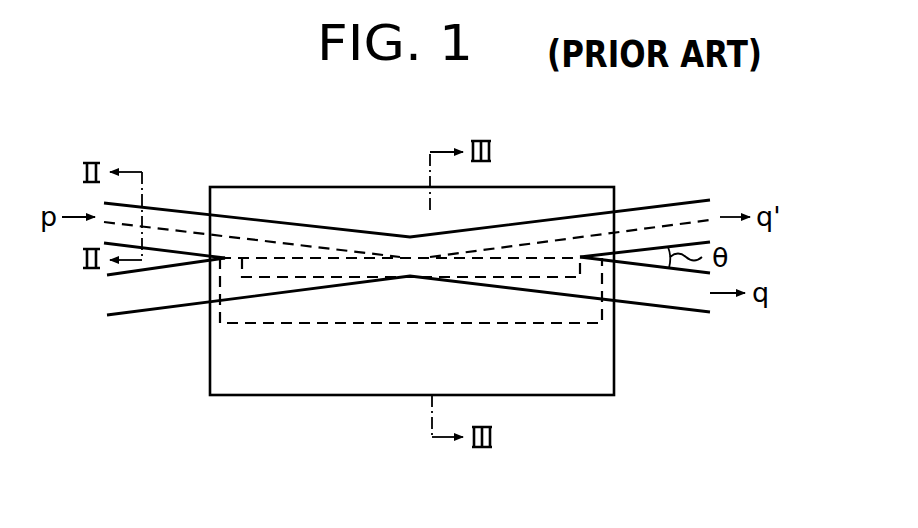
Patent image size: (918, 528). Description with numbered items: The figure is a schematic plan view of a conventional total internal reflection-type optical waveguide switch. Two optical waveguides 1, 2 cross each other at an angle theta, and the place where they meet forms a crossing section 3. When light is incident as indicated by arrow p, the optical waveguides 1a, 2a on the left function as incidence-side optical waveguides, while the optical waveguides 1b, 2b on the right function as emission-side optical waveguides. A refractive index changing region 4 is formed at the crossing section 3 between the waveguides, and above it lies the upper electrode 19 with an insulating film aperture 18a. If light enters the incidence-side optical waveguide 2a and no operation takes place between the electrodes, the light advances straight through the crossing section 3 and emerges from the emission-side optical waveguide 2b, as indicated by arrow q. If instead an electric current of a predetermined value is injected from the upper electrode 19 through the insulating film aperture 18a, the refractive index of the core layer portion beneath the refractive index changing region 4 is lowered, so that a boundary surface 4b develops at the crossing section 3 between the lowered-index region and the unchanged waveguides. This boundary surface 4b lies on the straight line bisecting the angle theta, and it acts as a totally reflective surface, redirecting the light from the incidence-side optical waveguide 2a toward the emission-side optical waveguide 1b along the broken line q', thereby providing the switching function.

The optical waveguide 1 is at (178, 325).
The incidence-side optical waveguide 1a is at (143, 293).
The emission-side optical waveguide 1b is at (637, 217).
The optical waveguide 2 is at (175, 190).
The incidence-side optical waveguide 2a is at (192, 218).
The emission-side optical waveguide 2b is at (667, 292).
The crossing section 3 is at (297, 232).
The refractive index changing region 4 is at (284, 313).
The boundary surface 4b is at (345, 264).
The insulating film aperture 18a is at (550, 272).
The upper electrode 19 is at (527, 197).